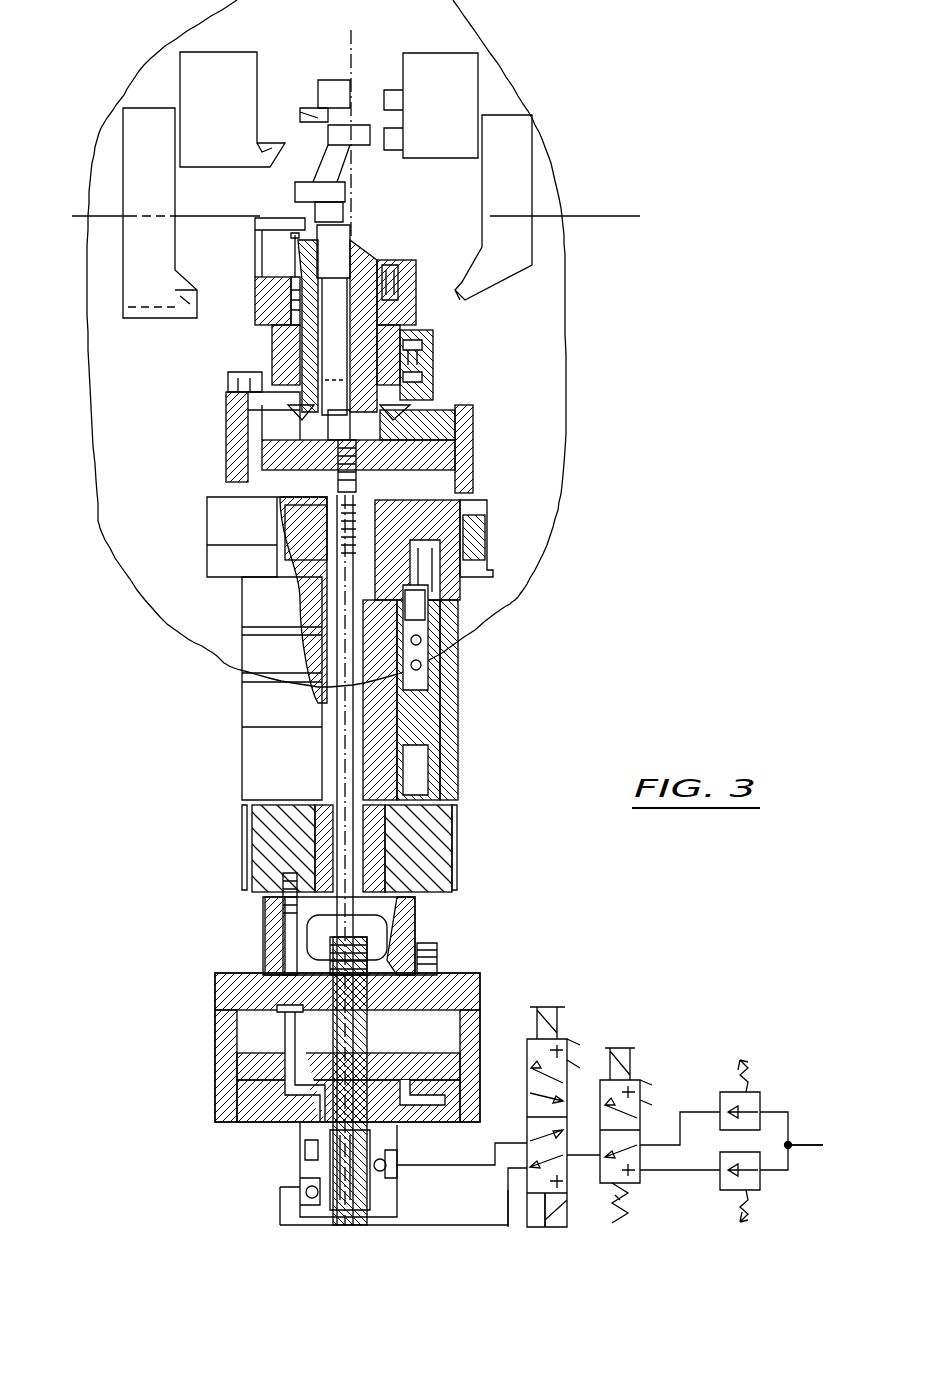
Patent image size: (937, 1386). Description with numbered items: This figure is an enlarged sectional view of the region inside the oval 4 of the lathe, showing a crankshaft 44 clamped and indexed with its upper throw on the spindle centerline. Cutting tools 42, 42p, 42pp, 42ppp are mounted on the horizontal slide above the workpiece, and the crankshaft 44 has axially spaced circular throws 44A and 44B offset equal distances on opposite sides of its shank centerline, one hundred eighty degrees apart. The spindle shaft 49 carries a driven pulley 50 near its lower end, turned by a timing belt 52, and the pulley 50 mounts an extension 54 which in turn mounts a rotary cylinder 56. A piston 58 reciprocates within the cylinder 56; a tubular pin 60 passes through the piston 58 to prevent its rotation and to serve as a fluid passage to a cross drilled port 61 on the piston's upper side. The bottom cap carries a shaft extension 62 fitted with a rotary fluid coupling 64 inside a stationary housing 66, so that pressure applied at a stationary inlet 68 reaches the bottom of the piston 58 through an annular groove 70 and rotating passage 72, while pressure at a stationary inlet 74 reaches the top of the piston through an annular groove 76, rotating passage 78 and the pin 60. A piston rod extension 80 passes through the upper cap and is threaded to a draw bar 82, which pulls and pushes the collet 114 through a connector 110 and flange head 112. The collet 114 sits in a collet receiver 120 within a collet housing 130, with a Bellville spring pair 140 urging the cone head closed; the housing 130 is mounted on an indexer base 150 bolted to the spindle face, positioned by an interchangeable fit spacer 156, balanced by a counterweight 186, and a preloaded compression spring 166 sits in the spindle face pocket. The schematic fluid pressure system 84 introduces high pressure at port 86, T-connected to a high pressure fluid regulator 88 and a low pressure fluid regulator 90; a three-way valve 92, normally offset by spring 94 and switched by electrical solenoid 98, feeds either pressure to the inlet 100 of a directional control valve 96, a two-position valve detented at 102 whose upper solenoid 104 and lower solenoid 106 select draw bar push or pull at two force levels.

The oval 4 is at (575, 376).
The tool 42 is at (135, 275).
The tool 42p is at (188, 85).
The tool 42pp is at (455, 82).
The tool 42ppp is at (520, 175).
The crankshaft 44 is at (355, 175).
The circular throw 44A is at (332, 133).
The circular throw 44B is at (300, 190).
The spindle shaft 49 is at (392, 720).
The driven pulley 50 is at (440, 833).
The timing belt 52 is at (457, 848).
The extension 54 is at (415, 920).
The rotary cylinder 56 is at (437, 1063).
The piston 58 is at (533, 1036).
The tubular pin 60 is at (275, 1060).
The cross drilled port 61 is at (310, 1008).
The shaft extension 62 is at (335, 1150).
The rotary fluid coupling 64 is at (300, 1135).
The stationary housing 66 is at (308, 1170).
The stationary inlet 68 is at (400, 1172).
The annular groove 70 is at (370, 1166).
The rotating passage 72 is at (410, 1100).
The stationary inlet 74 is at (300, 1200).
The annular groove 76 is at (330, 1195).
The rotating passage 78 is at (300, 1108).
The piston rod extension 80 is at (340, 985).
The draw bar 82 is at (347, 928).
The fluid pressure system 84 is at (702, 1050).
The port 86 is at (810, 1145).
The high pressure fluid regulator 88 is at (752, 1097).
The low pressure fluid regulator 90 is at (762, 1180).
The three-way valve 92 is at (642, 1050).
The spring 94 is at (628, 1212).
The directional control valve 96 is at (572, 1068).
The electrical solenoid 98 is at (652, 1050).
The directional valve inlet 100 is at (578, 1165).
The detent 102 is at (520, 1220).
The upper solenoid 104 is at (568, 1045).
The lower solenoid 106 is at (560, 1215).
The connector 110 is at (432, 466).
The flange head 112 is at (425, 432).
The collet 114 is at (357, 250).
The collet receiver 120 is at (373, 282).
The collet housing 130 is at (433, 350).
The Bellville spring pair 140 is at (425, 398).
The indexer base 150 is at (234, 444).
The fit spacer 156 is at (250, 378).
The compression spring 166 is at (380, 512).
The counterweight 186 is at (437, 352).